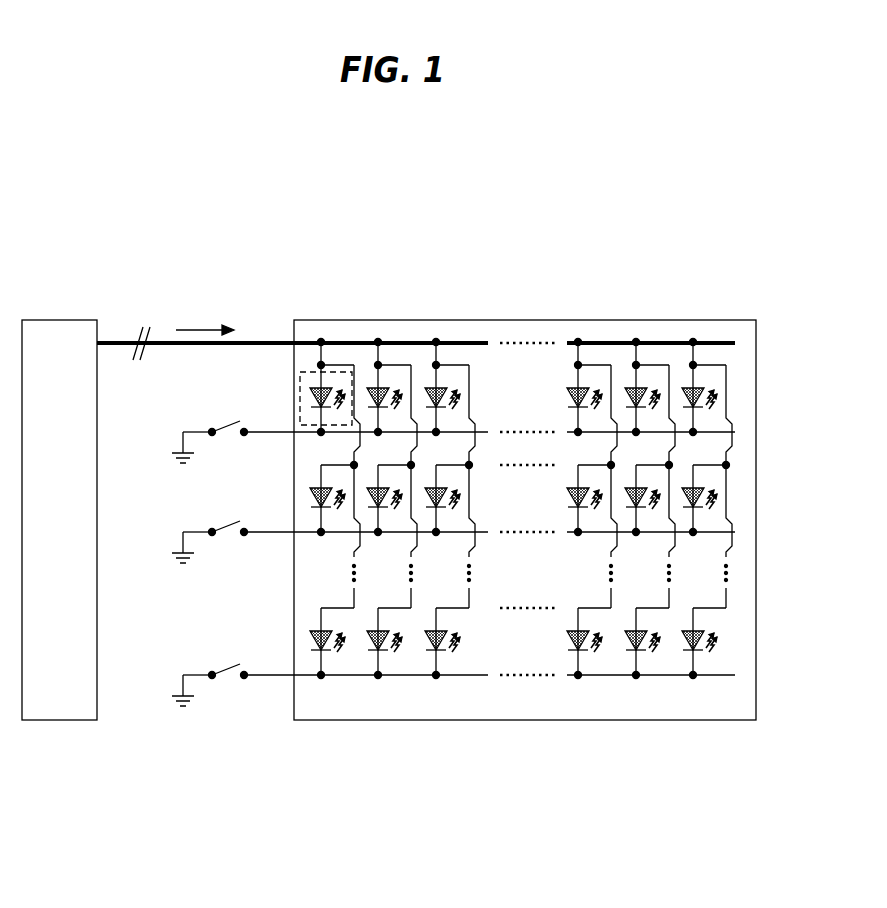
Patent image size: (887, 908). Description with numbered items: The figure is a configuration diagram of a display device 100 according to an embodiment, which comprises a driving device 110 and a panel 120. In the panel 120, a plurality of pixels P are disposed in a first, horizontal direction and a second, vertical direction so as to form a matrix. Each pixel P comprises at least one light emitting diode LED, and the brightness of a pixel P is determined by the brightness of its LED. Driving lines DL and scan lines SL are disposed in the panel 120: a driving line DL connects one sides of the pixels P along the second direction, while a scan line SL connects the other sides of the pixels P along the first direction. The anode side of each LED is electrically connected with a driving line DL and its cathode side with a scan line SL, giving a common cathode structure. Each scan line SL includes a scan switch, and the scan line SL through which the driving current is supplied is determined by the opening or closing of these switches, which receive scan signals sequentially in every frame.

The display device 100 is at (108, 167).
The driving device 110 is at (84, 318).
The panel 120 is at (732, 320).
The pixel P is at (284, 341).
The driving line DL is at (340, 372).
The scan line SL is at (482, 430).
The light emitting diode LED is at (300, 384).